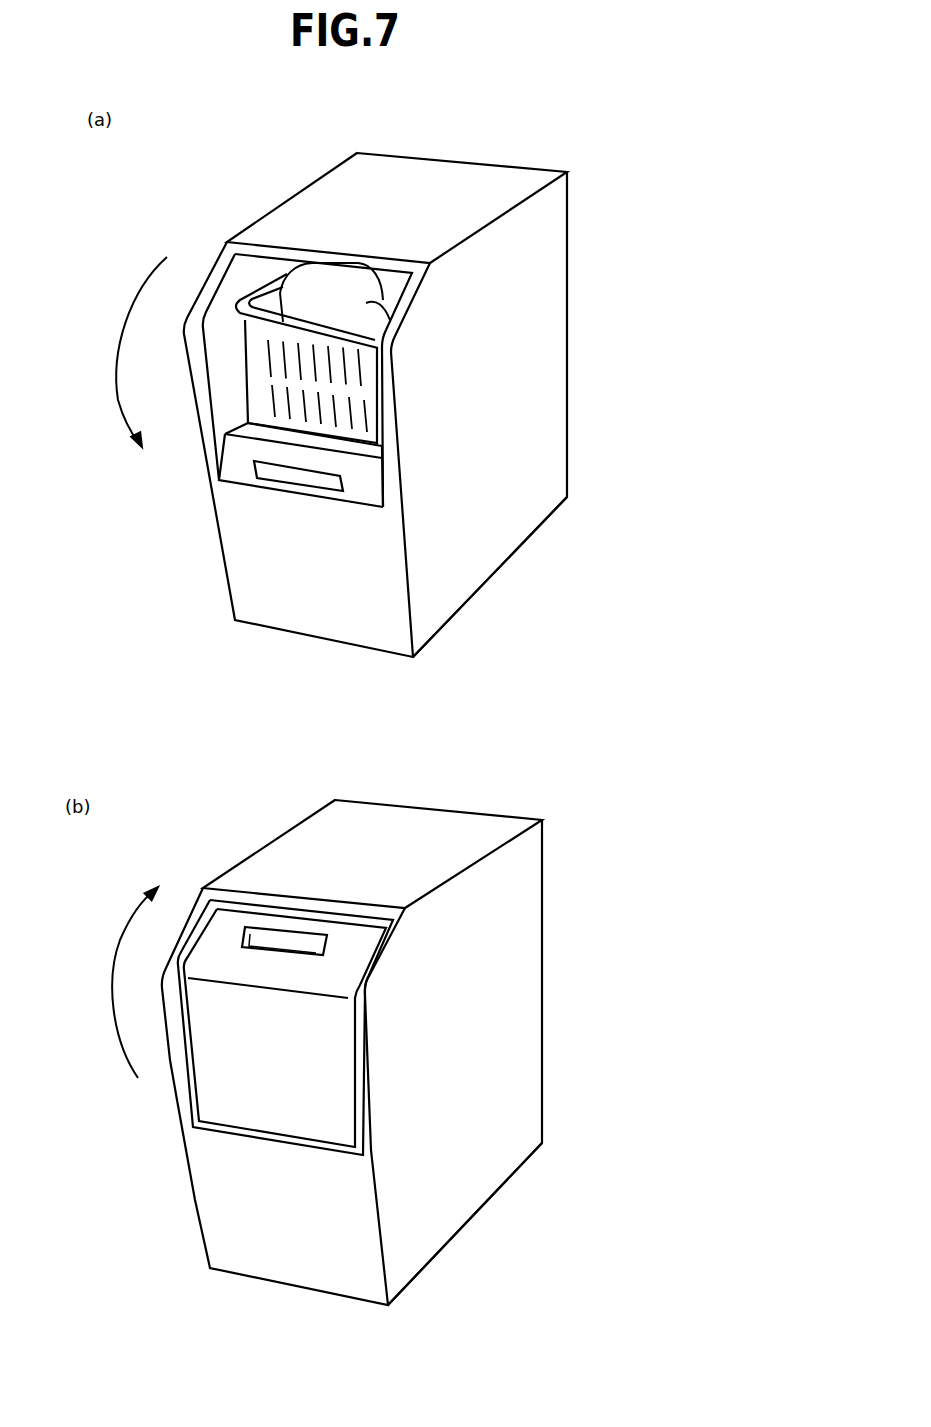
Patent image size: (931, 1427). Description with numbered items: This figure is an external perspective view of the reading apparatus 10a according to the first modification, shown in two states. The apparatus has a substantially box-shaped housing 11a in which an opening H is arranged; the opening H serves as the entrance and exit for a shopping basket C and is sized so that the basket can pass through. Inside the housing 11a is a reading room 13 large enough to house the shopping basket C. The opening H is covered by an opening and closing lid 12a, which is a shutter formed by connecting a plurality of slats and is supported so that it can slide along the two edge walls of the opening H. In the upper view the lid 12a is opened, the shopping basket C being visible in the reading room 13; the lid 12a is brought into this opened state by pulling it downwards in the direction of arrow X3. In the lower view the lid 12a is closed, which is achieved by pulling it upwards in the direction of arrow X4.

The reading apparatus 10a is at (614, 190).
The housing 11a is at (493, 555).
The opening and closing lid 12a is at (243, 452).
The reading room 13 is at (225, 308).
The shopping basket C is at (304, 350).
The opening H is at (228, 399).
The arrow X3 is at (122, 352).
The arrow X4 is at (112, 982).